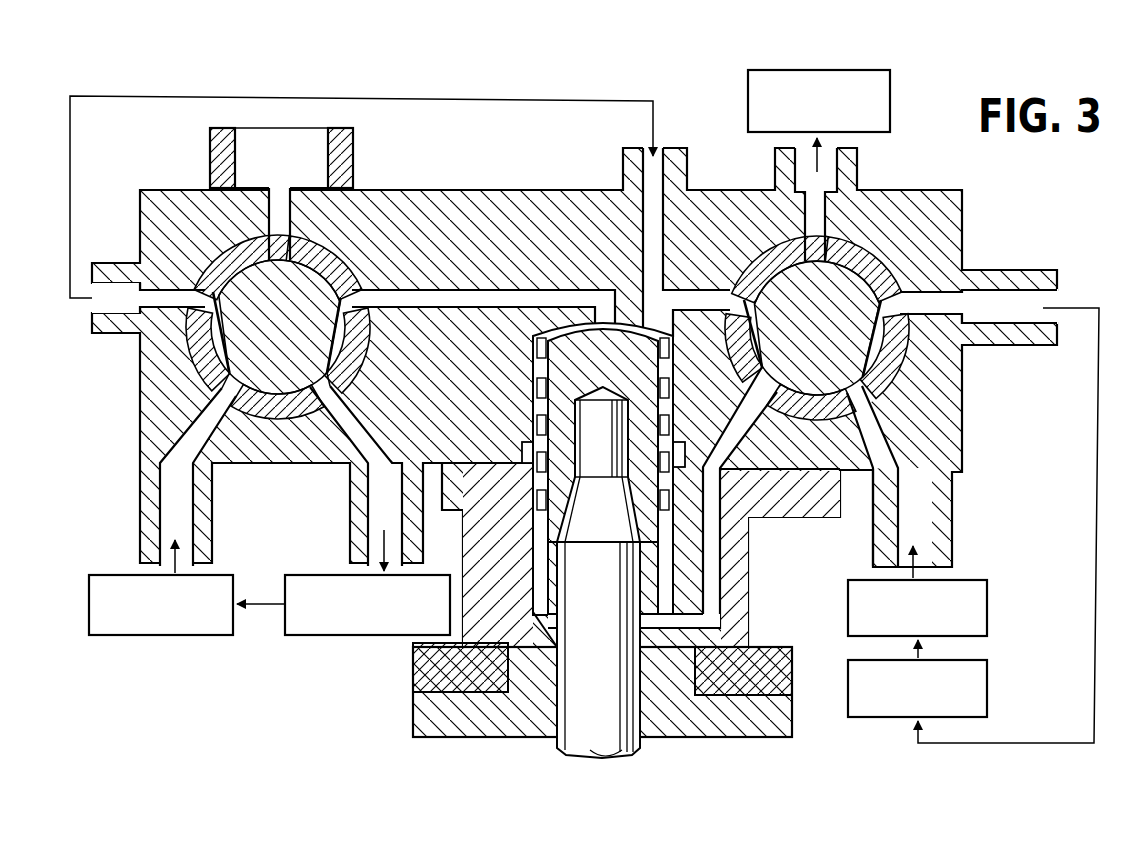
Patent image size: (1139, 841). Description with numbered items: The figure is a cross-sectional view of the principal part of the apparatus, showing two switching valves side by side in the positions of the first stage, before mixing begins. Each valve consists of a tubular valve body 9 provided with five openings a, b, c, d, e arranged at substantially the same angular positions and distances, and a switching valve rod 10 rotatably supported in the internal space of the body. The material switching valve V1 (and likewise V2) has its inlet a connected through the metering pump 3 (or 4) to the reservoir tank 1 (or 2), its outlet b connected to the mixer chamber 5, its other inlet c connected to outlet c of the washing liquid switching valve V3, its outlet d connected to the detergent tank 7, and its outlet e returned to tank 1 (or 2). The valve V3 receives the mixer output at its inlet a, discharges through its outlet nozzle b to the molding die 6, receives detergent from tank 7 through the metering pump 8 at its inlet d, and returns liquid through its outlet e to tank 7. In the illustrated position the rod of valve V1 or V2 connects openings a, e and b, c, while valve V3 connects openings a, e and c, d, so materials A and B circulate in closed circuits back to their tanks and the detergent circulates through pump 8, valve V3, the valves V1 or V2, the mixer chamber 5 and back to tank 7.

The reservoir tank 1 is at (957, 688).
The reservoir tank 2 is at (987, 685).
The metering pump 3 is at (957, 608).
The metering pump 4 is at (987, 604).
The mixer chamber 5 is at (550, 392).
The molding die 6 is at (210, 158).
The reservoir tank 7 is at (748, 103).
The metering pump 8 is at (163, 636).
The tubular valve body 9 is at (772, 268).
The switching valve rod 10 is at (807, 370).
The material switching valve V1 is at (850, 383).
The material switching valve V2 is at (850, 383).
The washing liquid switching valve V3 is at (353, 357).
The inlet opening a is at (482, 305).
The outlet opening b is at (279, 224).
The detergent opening c is at (172, 298).
The detergent opening d is at (198, 472).
The return outlet opening e is at (356, 475).